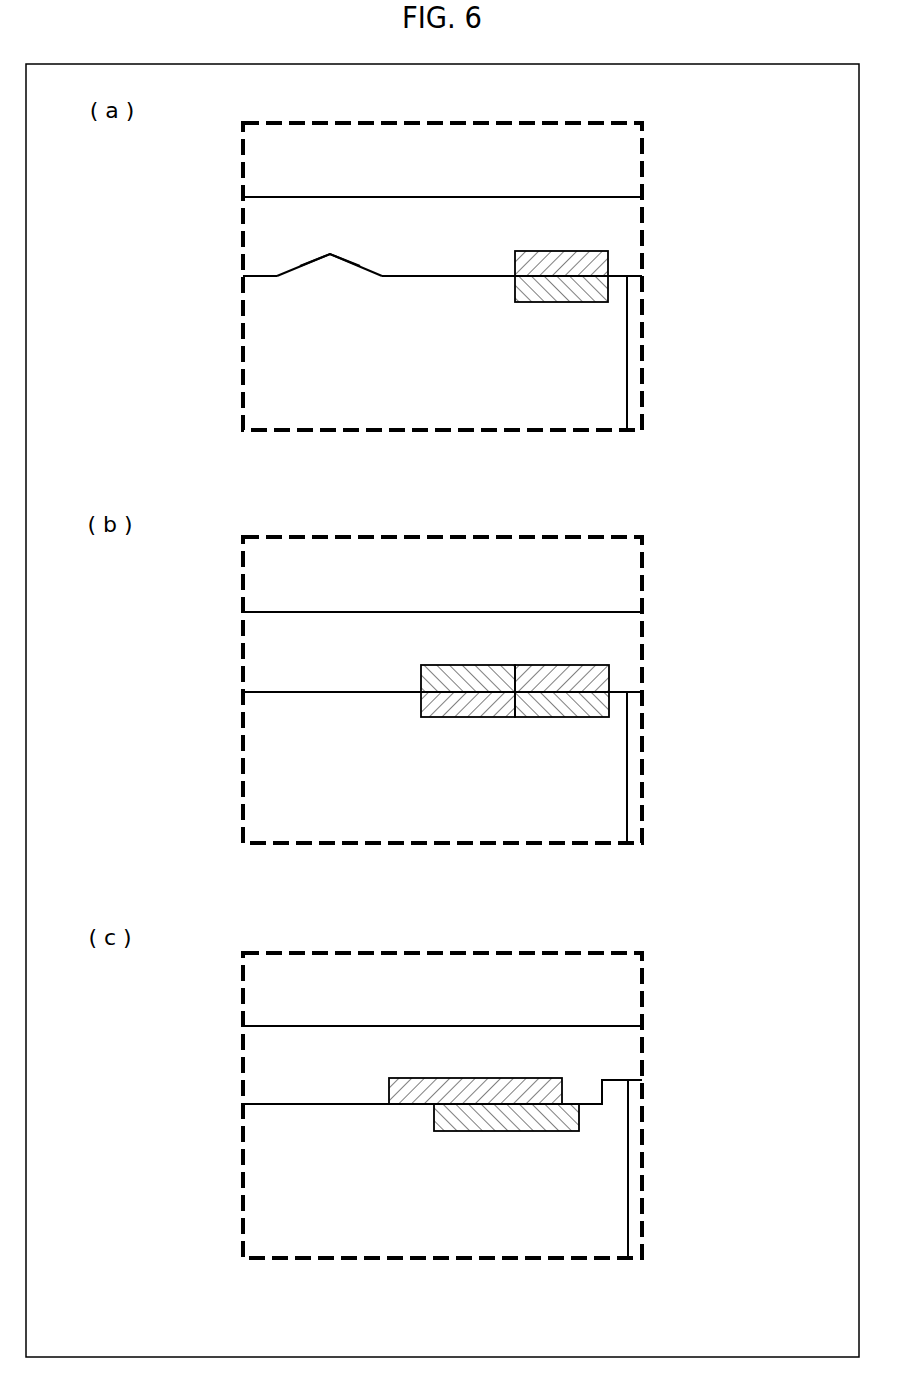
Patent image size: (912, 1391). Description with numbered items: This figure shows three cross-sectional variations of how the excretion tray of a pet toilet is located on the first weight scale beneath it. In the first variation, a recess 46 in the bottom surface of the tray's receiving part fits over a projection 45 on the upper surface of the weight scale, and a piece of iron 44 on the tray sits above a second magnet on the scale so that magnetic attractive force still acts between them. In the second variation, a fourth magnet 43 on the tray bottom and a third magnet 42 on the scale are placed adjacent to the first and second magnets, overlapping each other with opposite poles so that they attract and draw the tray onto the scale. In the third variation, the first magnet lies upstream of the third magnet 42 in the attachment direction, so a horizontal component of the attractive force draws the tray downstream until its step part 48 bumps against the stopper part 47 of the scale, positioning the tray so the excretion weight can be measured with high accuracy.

The third magnet 42 is at (468, 705).
The fourth magnet 43 is at (468, 678).
The piece of iron 44 is at (608, 263).
The projection 45 is at (332, 269).
The recess 46 is at (347, 257).
The stopper part 47 is at (617, 1093).
The step part 48 is at (598, 1087).